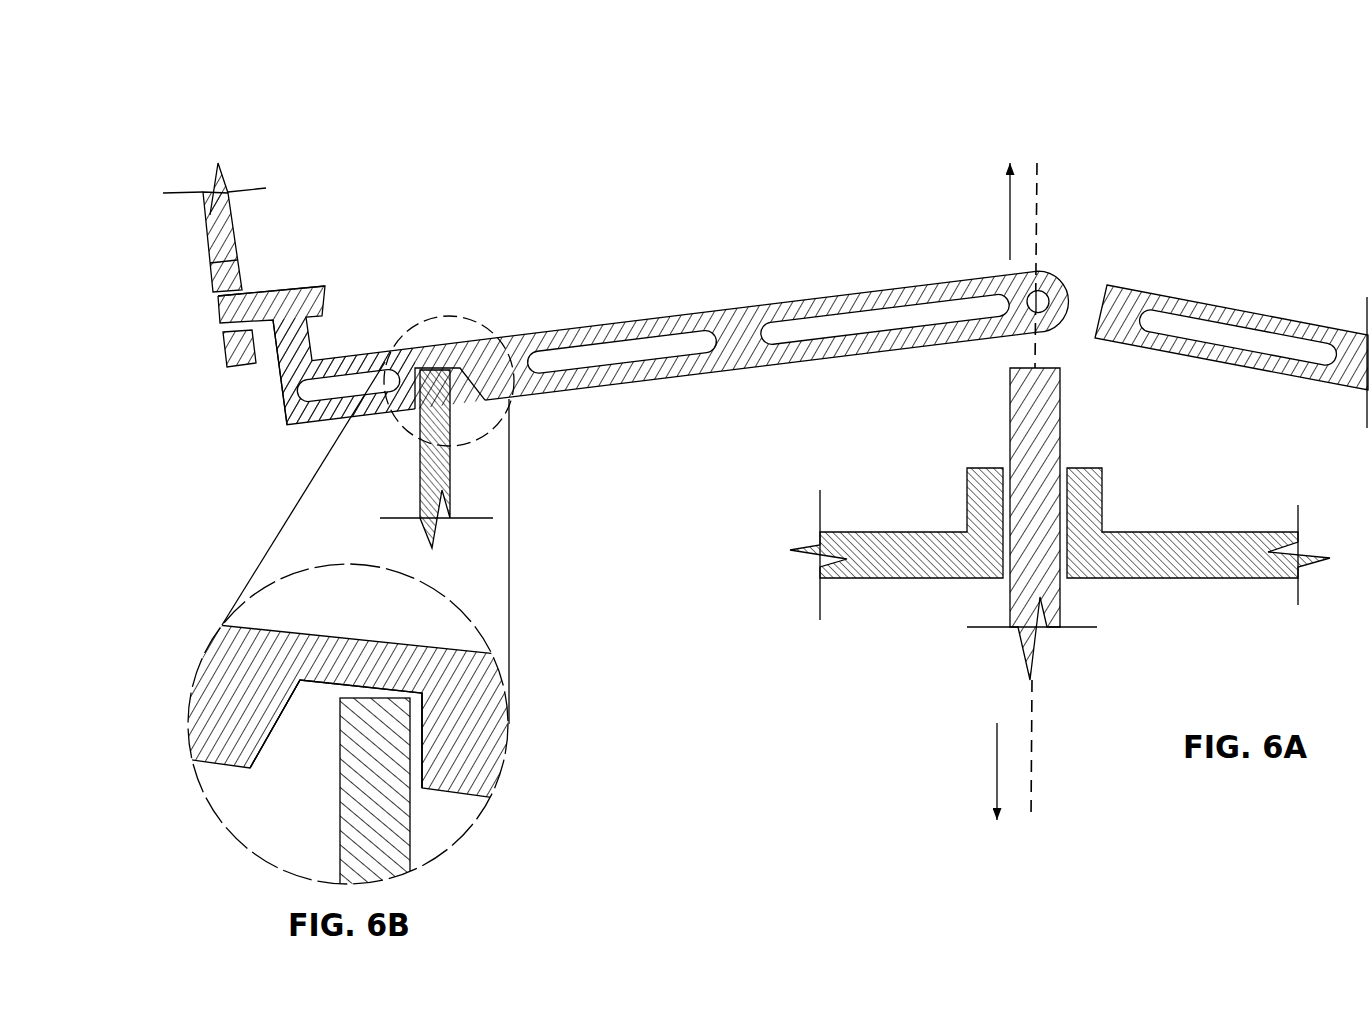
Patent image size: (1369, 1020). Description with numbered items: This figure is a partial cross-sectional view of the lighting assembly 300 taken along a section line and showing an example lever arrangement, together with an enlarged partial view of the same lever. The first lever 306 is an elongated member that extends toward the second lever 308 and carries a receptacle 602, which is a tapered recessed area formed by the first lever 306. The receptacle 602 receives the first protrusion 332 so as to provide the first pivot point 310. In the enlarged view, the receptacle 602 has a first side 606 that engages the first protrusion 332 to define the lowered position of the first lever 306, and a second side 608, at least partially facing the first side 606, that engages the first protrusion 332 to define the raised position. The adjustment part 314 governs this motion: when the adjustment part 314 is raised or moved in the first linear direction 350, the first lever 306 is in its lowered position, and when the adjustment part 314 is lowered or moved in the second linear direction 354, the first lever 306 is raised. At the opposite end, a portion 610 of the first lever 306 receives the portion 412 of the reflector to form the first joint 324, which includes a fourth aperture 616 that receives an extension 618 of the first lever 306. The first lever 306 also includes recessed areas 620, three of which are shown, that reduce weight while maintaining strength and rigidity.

In FIG. 6A, the lighting assembly 300 is at (748, 438).
In FIG. 6A, the first lever 306 is at (632, 344).
In FIG. 6B, the first lever 306 is at (290, 630).
In FIG. 6A, the second lever 308 is at (1250, 307).
In FIG. 6A, the first pivot point 310 is at (430, 337).
In FIG. 6A, the adjustment part 314 is at (1060, 428).
In FIG. 6A, the first joint 324 is at (306, 294).
In FIG. 6A, the first protrusion 332 is at (420, 470).
In FIG. 6B, the first protrusion 332 is at (412, 827).
In FIG. 6A, the first linear direction 350 is at (1007, 213).
In FIG. 6A, the second linear direction 354 is at (997, 757).
In FIG. 6A, the portion of the reflector 412 is at (235, 228).
In FIG. 6A, the receptacle 602 is at (468, 402).
In FIG. 6B, the receptacle 602 is at (280, 765).
In FIG. 6B, the first side 606 is at (273, 727).
In FIG. 6B, the second side 608 is at (421, 718).
In FIG. 6A, the portion of the first lever 610 is at (286, 408).
In FIG. 6A, the fourth aperture 616 is at (247, 290).
In FIG. 6A, the extension 618 is at (212, 310).
In FIG. 6A, the recessed areas 620 is at (343, 388).